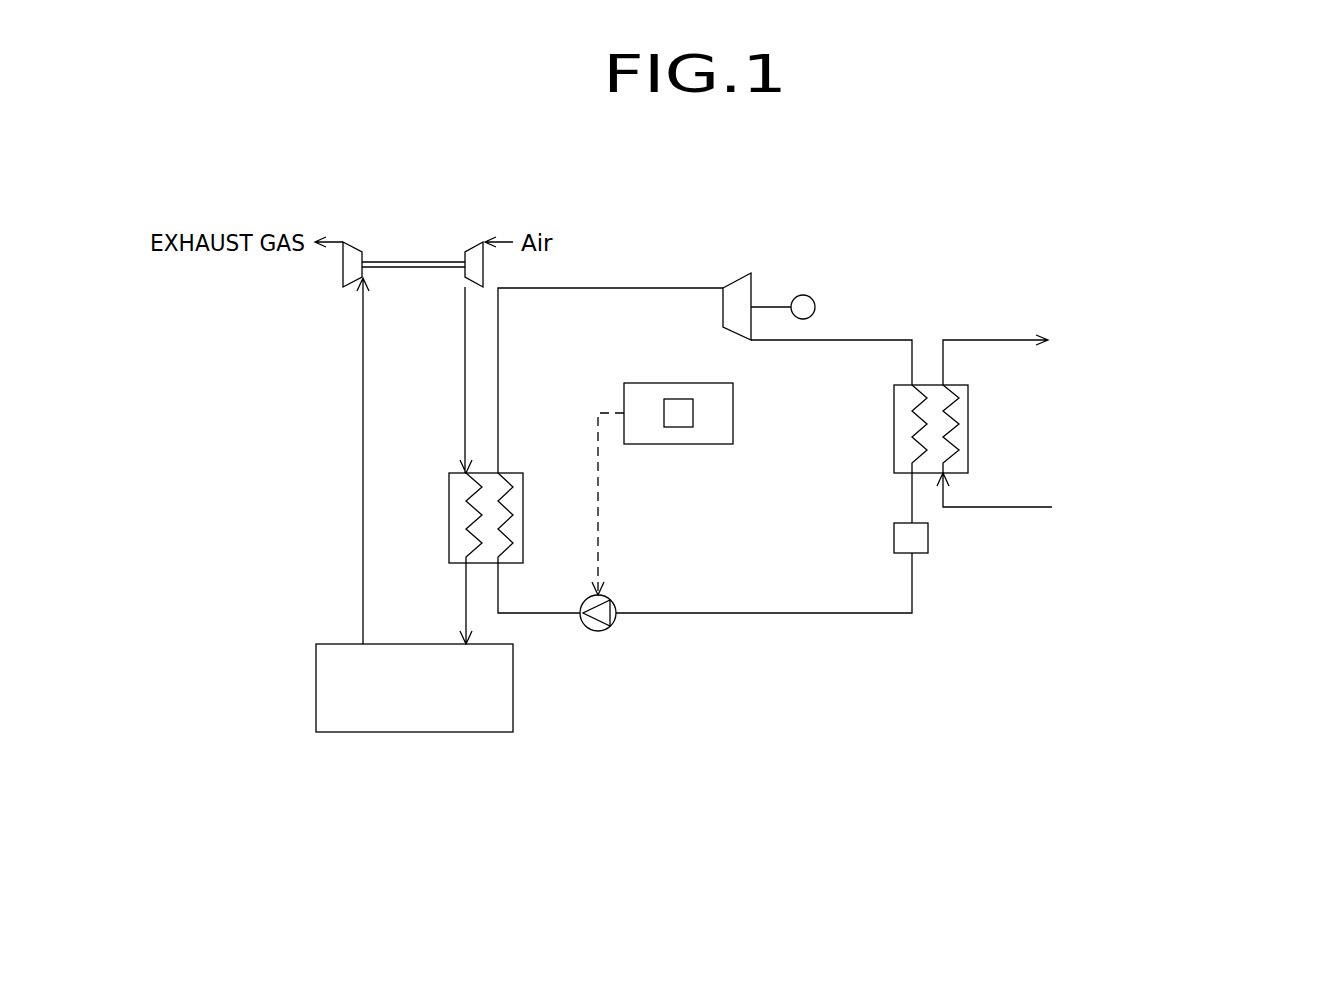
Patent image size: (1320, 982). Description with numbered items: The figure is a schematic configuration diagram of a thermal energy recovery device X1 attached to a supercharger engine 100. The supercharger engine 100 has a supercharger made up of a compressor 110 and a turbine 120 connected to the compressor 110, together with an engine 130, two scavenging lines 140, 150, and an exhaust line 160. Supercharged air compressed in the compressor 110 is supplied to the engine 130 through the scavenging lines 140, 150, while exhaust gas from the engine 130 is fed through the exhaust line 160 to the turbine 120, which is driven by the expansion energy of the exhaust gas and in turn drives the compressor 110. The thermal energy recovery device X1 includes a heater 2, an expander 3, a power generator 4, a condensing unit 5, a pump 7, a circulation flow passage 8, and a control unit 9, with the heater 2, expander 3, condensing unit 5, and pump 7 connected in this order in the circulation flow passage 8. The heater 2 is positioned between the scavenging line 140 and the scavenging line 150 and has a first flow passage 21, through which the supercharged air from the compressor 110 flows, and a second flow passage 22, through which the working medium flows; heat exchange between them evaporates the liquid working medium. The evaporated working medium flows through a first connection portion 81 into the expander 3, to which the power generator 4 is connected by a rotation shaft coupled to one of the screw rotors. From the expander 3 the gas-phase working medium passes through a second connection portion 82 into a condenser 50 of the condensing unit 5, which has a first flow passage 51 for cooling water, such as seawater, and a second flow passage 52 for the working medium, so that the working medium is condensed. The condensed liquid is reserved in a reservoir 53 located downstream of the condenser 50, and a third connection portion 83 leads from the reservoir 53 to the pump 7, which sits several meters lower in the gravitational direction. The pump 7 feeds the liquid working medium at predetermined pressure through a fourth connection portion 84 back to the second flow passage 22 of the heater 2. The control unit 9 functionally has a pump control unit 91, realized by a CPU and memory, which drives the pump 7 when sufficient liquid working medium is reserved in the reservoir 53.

The thermal energy recovery device X1 is at (784, 187).
The supercharger engine 100 is at (416, 227).
The compressor 110 is at (480, 241).
The turbine 120 is at (347, 241).
The engine 130 is at (316, 688).
The scavenging line 140 is at (465, 331).
The scavenging line 150 is at (466, 597).
The exhaust line 160 is at (363, 390).
The heater 2 is at (488, 518).
The first flow passage 21 is at (467, 527).
The second flow passage 22 is at (513, 510).
The expander 3 is at (732, 274).
The power generator 4 is at (803, 295).
The condensing unit 5 is at (1042, 444).
The condenser 50 is at (968, 395).
The first flow passage 51 is at (960, 420).
The second flow passage 52 is at (912, 436).
The reservoir 53 is at (894, 536).
The pump 7 is at (598, 632).
The circulation flow passage 8 is at (705, 439).
The first connection portion 81 is at (550, 290).
The second connection portion 82 is at (868, 340).
The third connection portion 83 is at (780, 615).
The fourth connection portion 84 is at (553, 616).
The control unit 9 is at (662, 462).
The pump control unit 91 is at (679, 430).